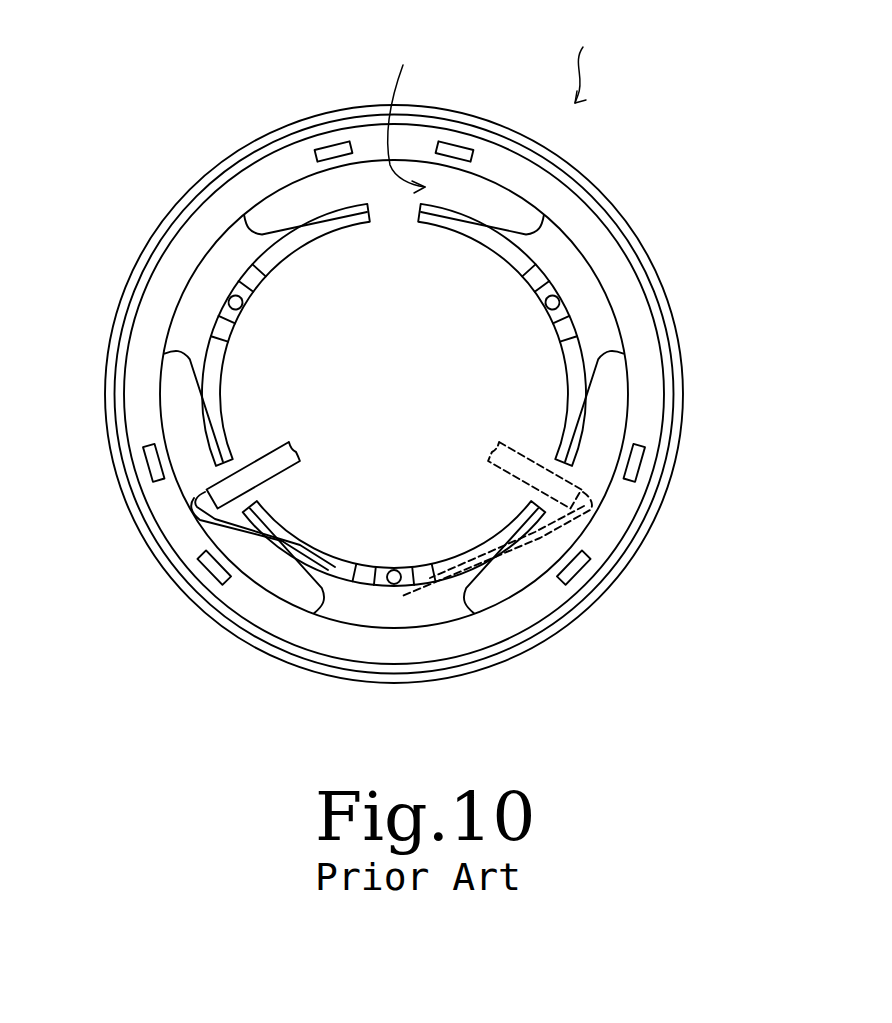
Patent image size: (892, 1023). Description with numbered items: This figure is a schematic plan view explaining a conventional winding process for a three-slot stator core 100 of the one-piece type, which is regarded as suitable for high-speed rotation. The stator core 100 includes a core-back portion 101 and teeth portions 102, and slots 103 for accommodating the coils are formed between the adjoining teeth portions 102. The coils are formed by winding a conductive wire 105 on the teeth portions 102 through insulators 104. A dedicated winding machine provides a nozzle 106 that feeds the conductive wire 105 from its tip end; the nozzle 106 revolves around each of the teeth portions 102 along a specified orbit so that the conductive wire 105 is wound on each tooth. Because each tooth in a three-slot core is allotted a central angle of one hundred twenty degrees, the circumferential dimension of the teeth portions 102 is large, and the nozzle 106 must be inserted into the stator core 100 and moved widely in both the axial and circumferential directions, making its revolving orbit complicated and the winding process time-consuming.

The stator core 100 is at (597, 61).
The core-back portion 101 is at (636, 405).
The teeth portions 102 is at (218, 272).
The slots 103 is at (409, 112).
The insulators 104 is at (565, 268).
The conductive wire 105 is at (362, 587).
The nozzle 106 is at (273, 460).